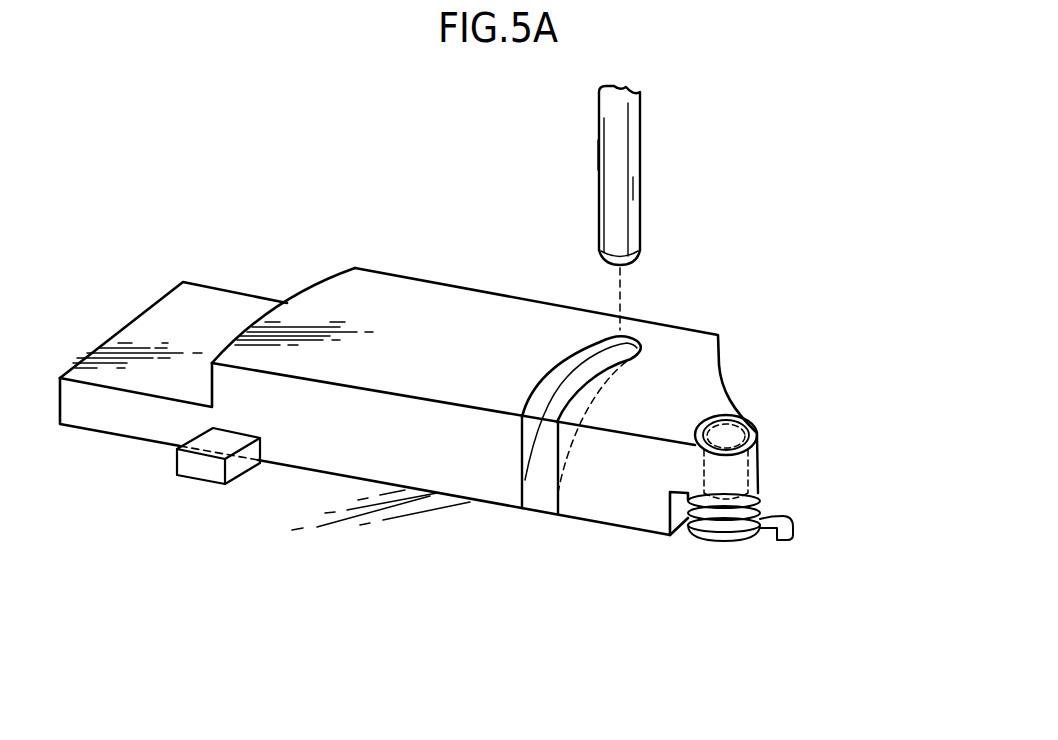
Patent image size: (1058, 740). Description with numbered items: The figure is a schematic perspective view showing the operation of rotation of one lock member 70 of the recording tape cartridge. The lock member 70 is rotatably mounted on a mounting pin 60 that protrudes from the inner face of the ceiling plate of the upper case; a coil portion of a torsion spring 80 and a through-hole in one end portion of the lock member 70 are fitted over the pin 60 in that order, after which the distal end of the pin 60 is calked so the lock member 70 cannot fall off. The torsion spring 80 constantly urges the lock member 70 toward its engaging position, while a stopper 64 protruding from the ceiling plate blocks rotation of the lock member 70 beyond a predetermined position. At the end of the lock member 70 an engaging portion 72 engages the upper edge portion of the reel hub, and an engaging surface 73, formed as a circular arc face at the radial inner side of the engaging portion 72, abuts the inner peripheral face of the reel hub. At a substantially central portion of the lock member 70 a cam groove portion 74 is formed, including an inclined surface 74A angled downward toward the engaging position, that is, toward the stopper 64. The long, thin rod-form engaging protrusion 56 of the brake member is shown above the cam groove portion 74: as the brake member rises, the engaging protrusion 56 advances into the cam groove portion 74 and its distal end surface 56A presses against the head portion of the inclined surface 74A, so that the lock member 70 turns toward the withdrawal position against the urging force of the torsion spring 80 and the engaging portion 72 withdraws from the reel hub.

The engaging protrusion 56 is at (626, 165).
The distal end surface 56A is at (623, 266).
The mounting pin 60 is at (727, 420).
The stopper 64 is at (202, 472).
The lock member 70 is at (417, 277).
The engaging portion 72 is at (223, 308).
The engaging surface 73 is at (328, 281).
The cam groove portion 74 is at (535, 406).
The inclined surface 74A is at (541, 494).
The torsion spring 80 is at (759, 530).